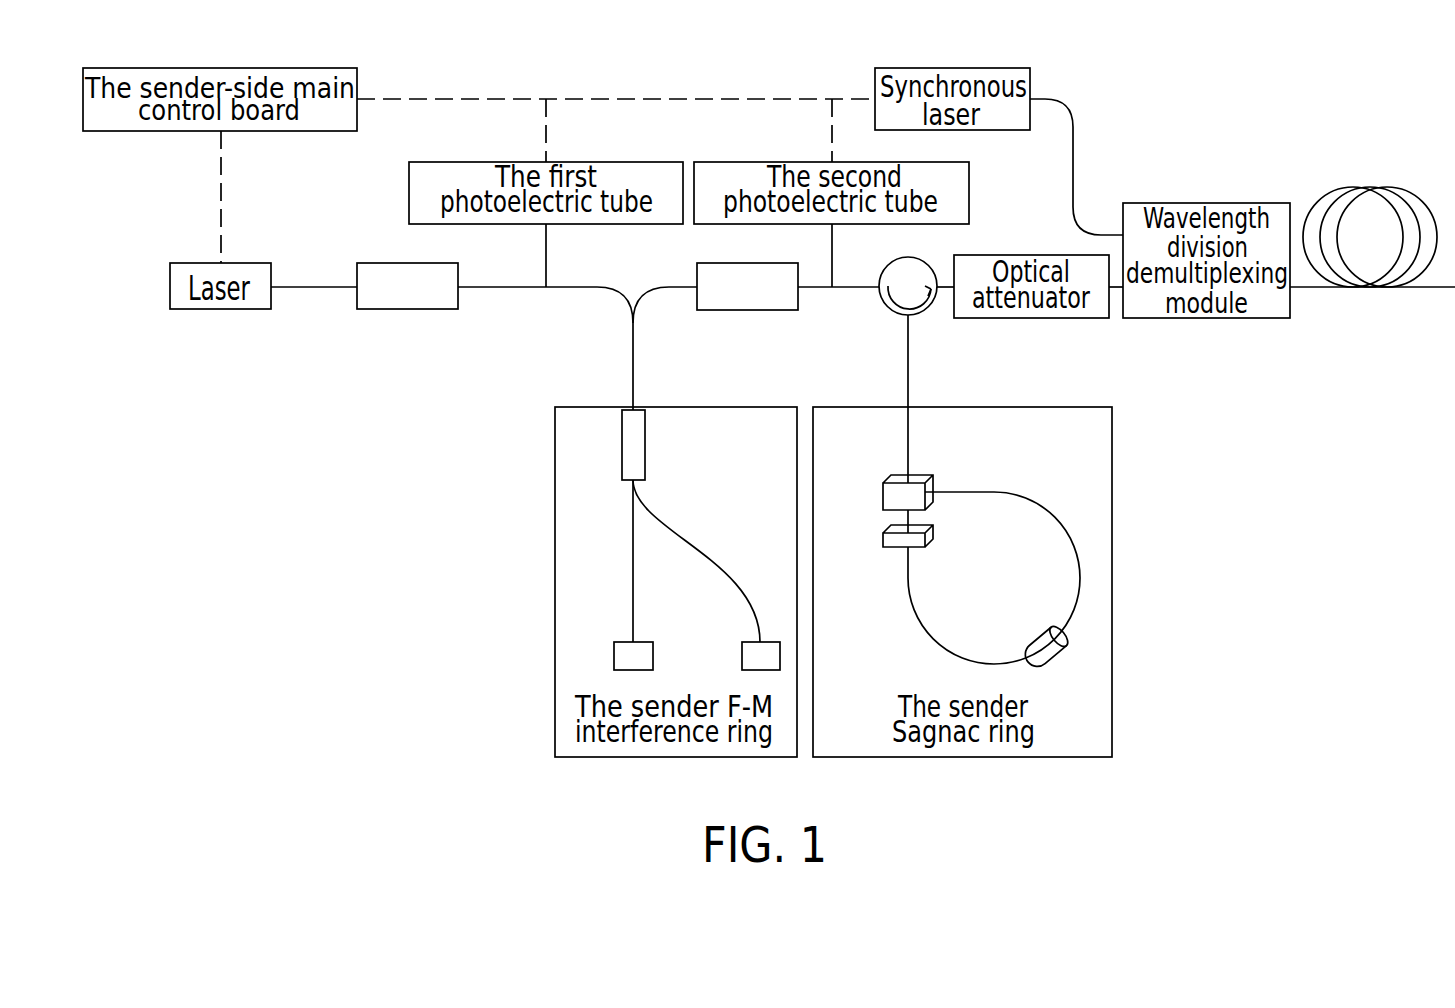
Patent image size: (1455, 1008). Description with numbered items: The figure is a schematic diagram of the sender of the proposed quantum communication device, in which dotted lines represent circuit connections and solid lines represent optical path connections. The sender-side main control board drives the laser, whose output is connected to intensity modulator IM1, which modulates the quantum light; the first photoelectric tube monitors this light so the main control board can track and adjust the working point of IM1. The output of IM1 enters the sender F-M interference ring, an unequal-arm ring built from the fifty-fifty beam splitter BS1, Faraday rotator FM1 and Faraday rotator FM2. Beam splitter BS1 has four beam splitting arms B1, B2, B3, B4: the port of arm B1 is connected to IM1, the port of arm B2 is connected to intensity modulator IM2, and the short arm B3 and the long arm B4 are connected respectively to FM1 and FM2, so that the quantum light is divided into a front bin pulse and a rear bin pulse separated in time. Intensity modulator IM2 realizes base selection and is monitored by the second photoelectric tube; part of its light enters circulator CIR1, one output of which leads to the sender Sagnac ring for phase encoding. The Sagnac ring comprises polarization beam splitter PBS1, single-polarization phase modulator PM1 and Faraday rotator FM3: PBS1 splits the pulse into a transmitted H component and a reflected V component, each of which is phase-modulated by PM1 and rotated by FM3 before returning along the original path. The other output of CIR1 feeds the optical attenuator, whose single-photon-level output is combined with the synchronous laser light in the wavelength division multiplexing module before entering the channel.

The intensity modulator IM1 is at (407, 286).
The intensity modulator IM2 is at (747, 286).
The beam splitting arm B1 is at (545, 348).
The beam splitting arm B2 is at (665, 312).
The beam splitting arm B3 is at (610, 561).
The beam splitting arm B4 is at (700, 561).
The 50:50 beam splitter BS1 is at (659, 445).
The Faraday rotator FM1 is at (609, 657).
The Faraday rotator FM2 is at (735, 657).
The Faraday rotator FM3 is at (882, 539).
The polarization beam splitter PBS1 is at (877, 495).
The single-polarization phase modulator PM1 is at (1061, 655).
The circulator CIR1 is at (908, 269).